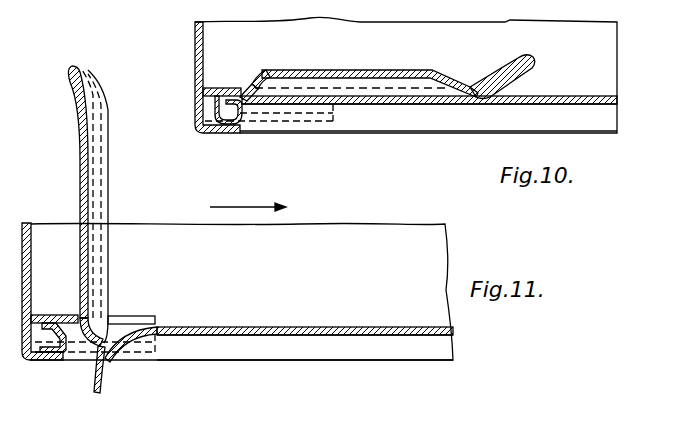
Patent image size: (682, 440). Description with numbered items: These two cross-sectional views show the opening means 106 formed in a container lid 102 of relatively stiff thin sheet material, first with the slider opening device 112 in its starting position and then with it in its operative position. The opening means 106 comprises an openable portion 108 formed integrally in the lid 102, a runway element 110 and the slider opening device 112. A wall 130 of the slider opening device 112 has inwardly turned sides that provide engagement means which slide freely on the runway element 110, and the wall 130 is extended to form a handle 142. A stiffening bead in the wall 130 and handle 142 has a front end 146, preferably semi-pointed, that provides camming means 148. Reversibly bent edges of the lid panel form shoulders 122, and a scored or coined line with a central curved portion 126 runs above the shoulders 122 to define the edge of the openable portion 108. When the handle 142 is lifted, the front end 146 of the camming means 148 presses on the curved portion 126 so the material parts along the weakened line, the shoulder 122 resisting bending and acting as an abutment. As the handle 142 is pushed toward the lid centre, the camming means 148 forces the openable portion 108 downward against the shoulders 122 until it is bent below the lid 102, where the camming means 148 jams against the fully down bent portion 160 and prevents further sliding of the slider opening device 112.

In FIG. 10, the lid 102 is at (571, 97).
In FIG. 10, the opening means 106 is at (371, 108).
In FIG. 11, the opening means 106 is at (150, 358).
In FIG. 10, the openable portion 108 is at (440, 105).
In FIG. 11, the openable portion 108 is at (220, 345).
In FIG. 10, the runway element 110 is at (505, 105).
In FIG. 11, the runway element 110 is at (340, 336).
In FIG. 10, the slider opening device 112 is at (358, 69).
In FIG. 11, the slider opening device 112 is at (80, 192).
In FIG. 10, the shoulder 122 is at (246, 130).
In FIG. 11, the shoulder 122 is at (67, 358).
In FIG. 10, the central curved portion 126 is at (238, 103).
In FIG. 10, the wall 130 is at (212, 86).
In FIG. 11, the wall 130 is at (147, 316).
In FIG. 10, the handle 142 is at (452, 78).
In FIG. 11, the handle 142 is at (110, 172).
In FIG. 10, the front end 146 is at (240, 92).
In FIG. 10, the camming means 148 is at (257, 84).
In FIG. 11, the camming means 148 is at (92, 352).
In FIG. 11, the fully down bent portion 160 is at (108, 365).